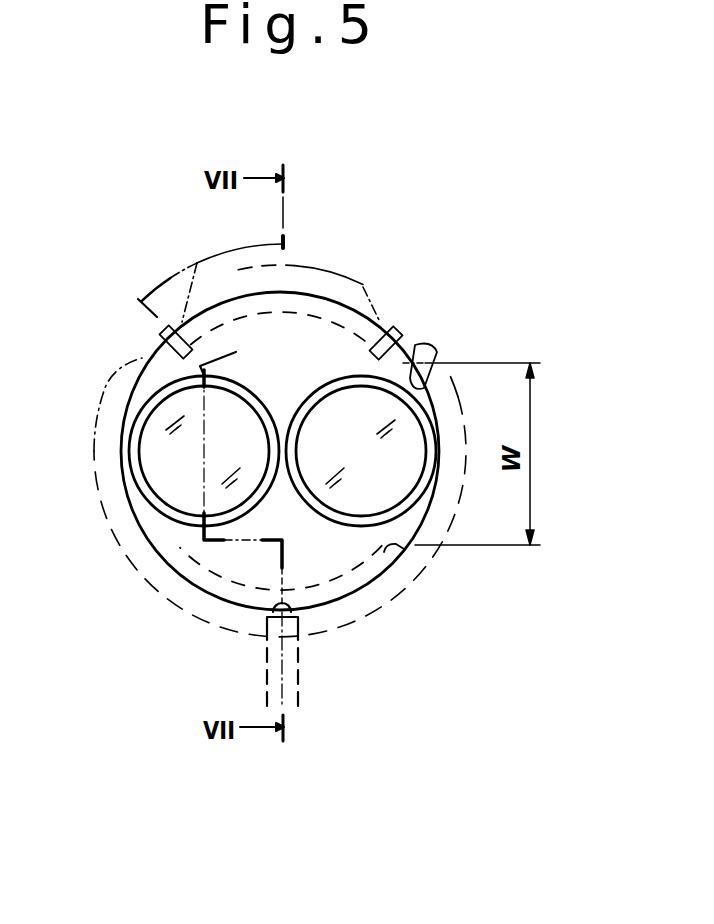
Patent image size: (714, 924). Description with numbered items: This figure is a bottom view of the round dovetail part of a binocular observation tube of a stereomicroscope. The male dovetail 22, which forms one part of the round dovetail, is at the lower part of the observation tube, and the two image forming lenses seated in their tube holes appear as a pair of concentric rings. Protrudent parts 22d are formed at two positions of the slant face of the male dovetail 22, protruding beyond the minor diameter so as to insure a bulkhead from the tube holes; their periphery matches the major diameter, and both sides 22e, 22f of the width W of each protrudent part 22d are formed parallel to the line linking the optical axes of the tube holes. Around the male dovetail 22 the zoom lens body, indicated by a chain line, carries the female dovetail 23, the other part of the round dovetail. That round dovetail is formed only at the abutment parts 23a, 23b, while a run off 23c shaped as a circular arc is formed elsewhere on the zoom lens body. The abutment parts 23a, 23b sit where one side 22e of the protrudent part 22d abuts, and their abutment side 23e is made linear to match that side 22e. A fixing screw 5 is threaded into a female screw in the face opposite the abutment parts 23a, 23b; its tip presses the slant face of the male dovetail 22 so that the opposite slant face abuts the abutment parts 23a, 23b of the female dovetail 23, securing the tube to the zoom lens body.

The fixing screw 5 is at (300, 674).
The male dovetail 22 is at (323, 353).
The protrudent part 22d is at (440, 448).
The side of protrudent part 22e is at (420, 343).
The side of protrudent part 22f is at (398, 550).
The female dovetail 23 is at (393, 313).
The abutment part 23a is at (153, 357).
The abutment part 23b is at (402, 335).
The run off 23c is at (313, 268).
The abutment side 23e is at (450, 377).